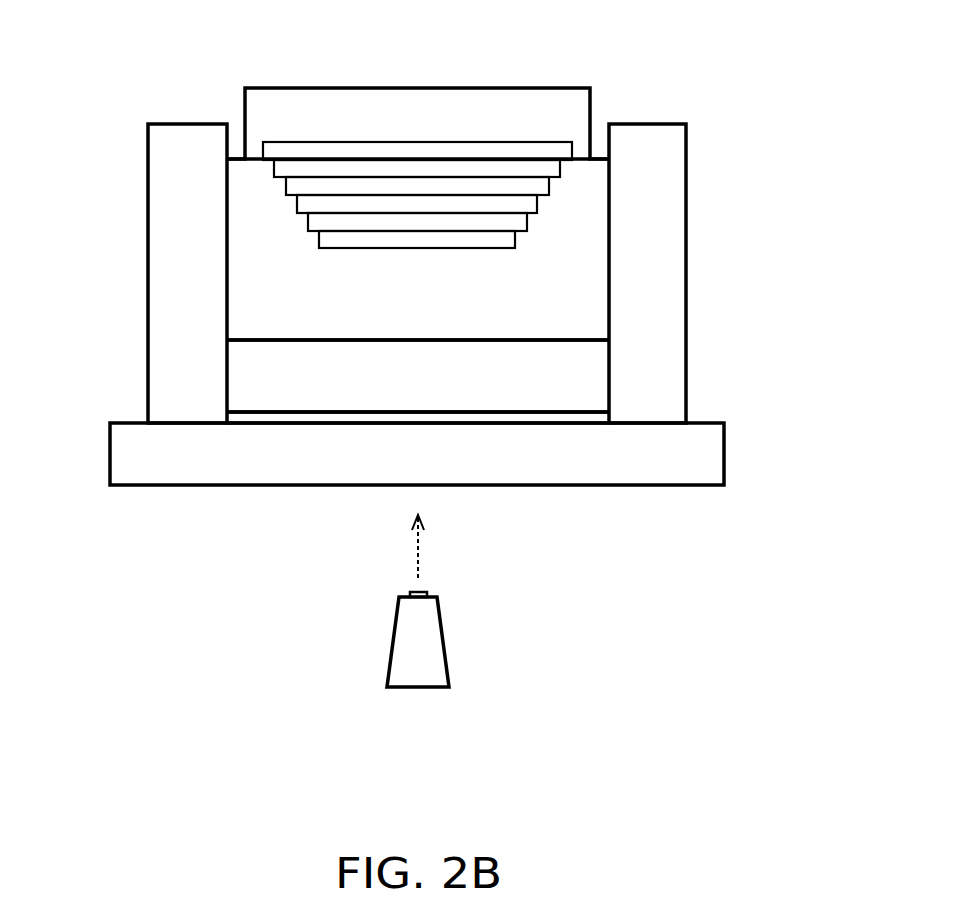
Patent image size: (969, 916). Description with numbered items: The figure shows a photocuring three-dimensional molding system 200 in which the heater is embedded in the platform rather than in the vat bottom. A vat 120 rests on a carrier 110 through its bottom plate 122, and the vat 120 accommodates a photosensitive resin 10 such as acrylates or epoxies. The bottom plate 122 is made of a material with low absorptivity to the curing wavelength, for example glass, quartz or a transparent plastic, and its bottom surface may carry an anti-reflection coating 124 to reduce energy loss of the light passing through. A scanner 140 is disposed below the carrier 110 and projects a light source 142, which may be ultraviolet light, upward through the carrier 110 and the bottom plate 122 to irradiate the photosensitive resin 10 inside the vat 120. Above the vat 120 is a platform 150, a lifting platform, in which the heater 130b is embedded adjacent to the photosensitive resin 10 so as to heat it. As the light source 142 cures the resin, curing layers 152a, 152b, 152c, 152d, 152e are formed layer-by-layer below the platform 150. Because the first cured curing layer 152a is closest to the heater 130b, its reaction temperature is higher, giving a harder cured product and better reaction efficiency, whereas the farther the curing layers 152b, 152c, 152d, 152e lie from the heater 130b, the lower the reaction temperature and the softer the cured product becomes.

The photocuring three-dimensional molding system 200 is at (98, 80).
The carrier 110 is at (717, 453).
The vat 120 is at (147, 282).
The bottom plate 122 is at (597, 392).
The anti-reflection coating 124 is at (243, 419).
The heater 130b is at (515, 148).
The photosensitive resin 10 is at (597, 278).
The platform 150 is at (582, 135).
The curing layer 152a is at (548, 168).
The curing layer 152b is at (540, 186).
The curing layer 152c is at (530, 204).
The curing layer 152d is at (520, 222).
The curing layer 152e is at (507, 238).
The scanner 140 is at (432, 642).
The light source 142 is at (418, 550).